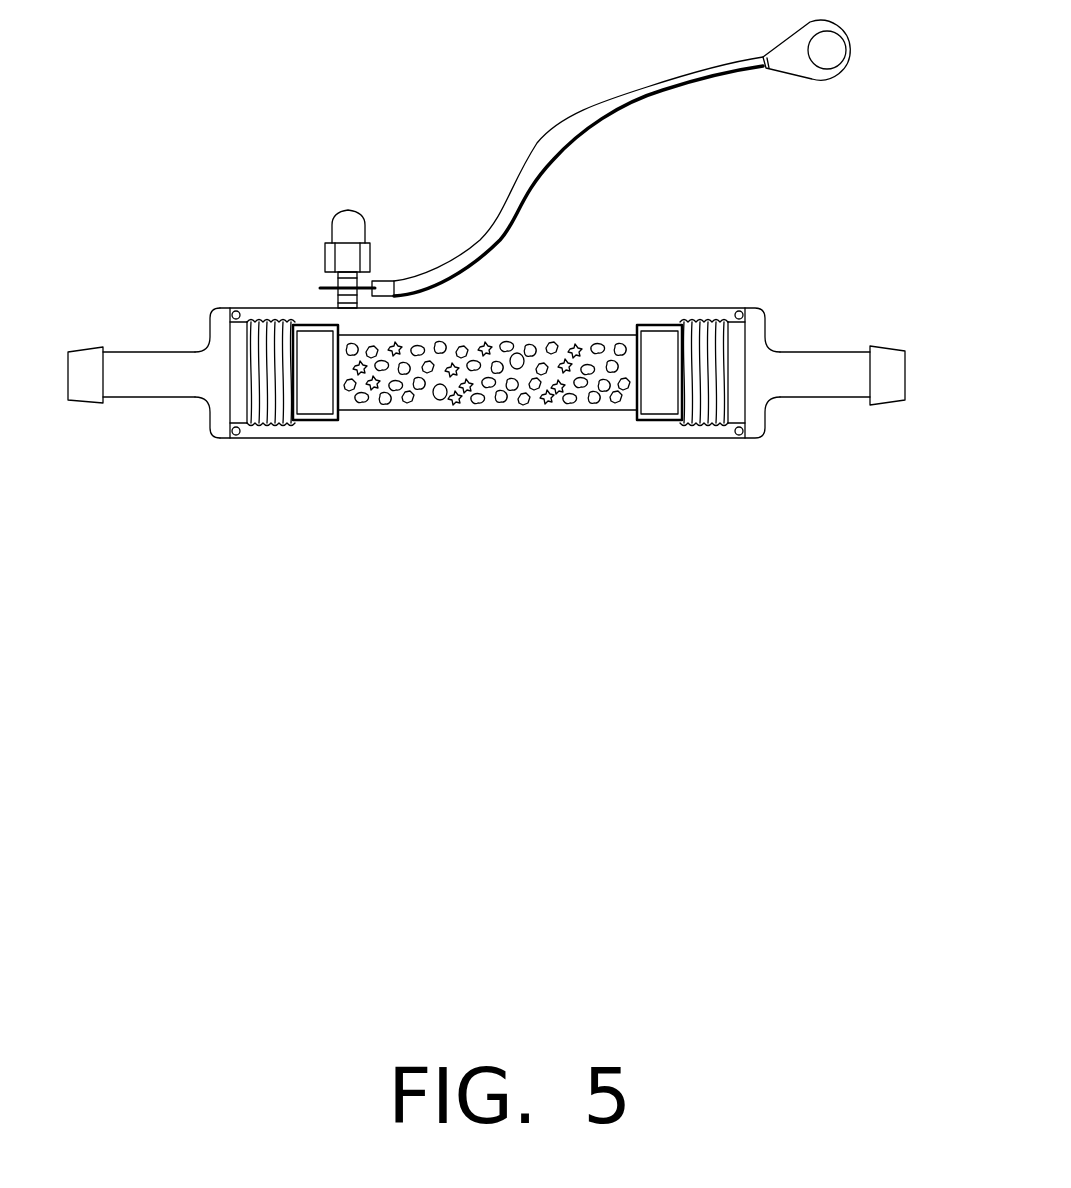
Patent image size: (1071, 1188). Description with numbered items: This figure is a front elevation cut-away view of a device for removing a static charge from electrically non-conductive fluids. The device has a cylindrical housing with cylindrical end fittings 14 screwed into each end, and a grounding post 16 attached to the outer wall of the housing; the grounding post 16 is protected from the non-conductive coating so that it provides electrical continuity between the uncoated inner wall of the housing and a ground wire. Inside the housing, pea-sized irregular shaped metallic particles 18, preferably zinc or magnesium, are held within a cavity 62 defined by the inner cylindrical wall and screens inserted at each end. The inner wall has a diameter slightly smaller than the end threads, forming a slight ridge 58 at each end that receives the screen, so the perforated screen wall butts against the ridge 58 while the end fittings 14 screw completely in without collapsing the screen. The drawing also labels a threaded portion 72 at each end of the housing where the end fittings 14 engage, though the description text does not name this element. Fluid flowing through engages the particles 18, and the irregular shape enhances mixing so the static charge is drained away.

The cylindrical end fittings 14 is at (158, 398).
The grounding post 16 is at (322, 286).
The metallic particles 18 is at (517, 353).
The ridge 58 is at (340, 327).
The cavity 62 is at (563, 335).
The threaded portions 72 is at (291, 322).